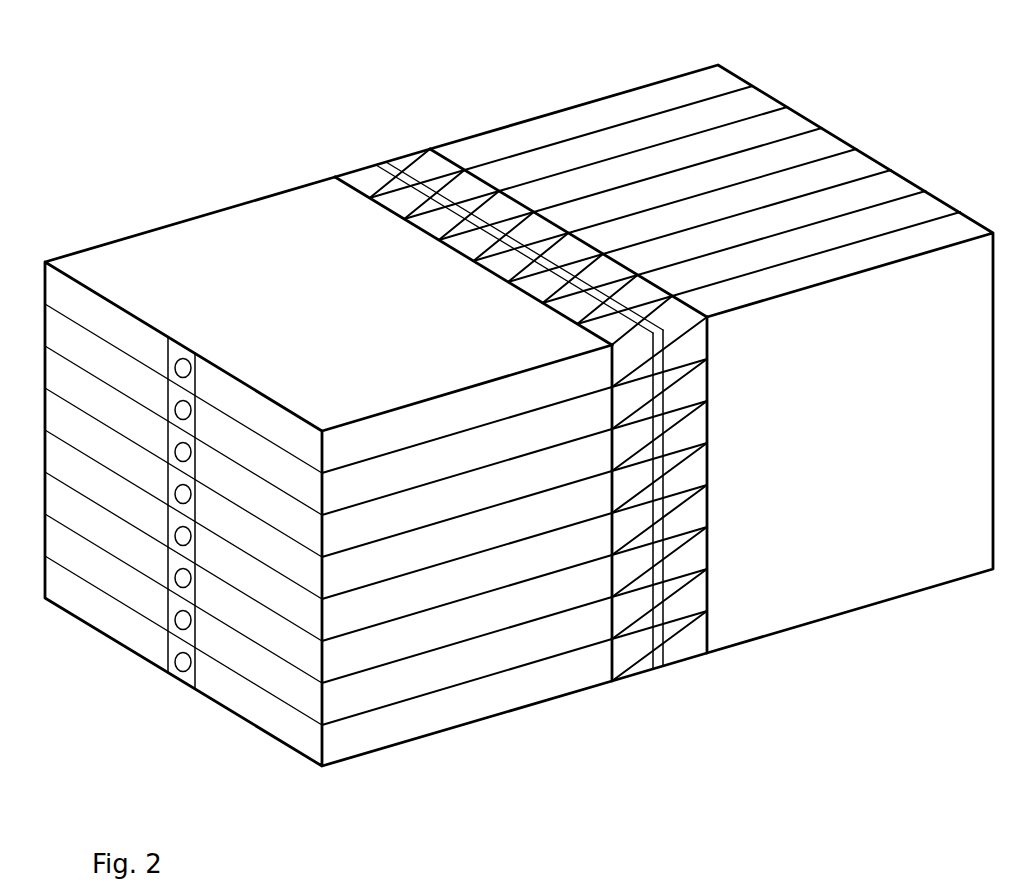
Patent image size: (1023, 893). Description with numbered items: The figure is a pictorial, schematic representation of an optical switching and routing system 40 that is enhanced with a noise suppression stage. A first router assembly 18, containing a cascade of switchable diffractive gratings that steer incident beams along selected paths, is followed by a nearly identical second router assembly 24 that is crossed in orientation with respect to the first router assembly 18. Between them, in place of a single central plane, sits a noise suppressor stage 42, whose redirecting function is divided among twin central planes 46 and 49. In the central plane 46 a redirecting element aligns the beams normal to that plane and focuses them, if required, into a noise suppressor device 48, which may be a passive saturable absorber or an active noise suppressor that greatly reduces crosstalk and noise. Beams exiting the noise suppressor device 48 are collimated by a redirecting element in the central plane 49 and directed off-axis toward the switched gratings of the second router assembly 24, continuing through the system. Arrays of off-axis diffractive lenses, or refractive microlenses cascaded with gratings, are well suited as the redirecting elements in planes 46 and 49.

The optical switching and routing system 40 is at (519, 456).
The first router assembly 18 is at (515, 795).
The second router assembly 24 is at (900, 668).
The noise suppressor stage 42 is at (500, 403).
The central plane 46 is at (338, 177).
The noise suppressor device 48 is at (386, 165).
The central plane 49 is at (430, 149).